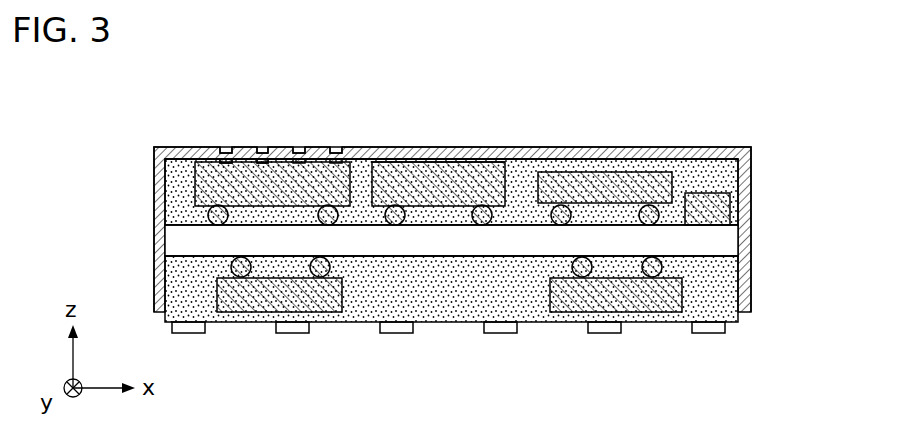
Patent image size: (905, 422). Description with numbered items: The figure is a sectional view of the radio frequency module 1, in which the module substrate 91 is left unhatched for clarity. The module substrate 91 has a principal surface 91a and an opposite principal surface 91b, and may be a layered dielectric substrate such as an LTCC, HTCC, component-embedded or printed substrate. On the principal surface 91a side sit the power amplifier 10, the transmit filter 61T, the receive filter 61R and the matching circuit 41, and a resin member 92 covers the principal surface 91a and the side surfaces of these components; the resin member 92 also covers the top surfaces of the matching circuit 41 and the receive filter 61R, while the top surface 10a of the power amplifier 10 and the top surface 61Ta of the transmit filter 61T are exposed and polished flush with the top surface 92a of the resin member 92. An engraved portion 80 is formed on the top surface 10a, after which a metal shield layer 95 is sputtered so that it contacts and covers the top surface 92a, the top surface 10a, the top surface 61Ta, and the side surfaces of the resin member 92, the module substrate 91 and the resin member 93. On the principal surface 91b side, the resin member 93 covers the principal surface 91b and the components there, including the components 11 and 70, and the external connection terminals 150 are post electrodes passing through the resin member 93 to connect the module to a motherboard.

The radio frequency module 1 is at (777, 95).
The power amplifier 10 is at (205, 185).
The top surface of the power amplifier 10a is at (240, 148).
The engraved portion 80 is at (293, 148).
The transmit filter 61T is at (487, 161).
The top surface of the transmit filter 61Ta is at (423, 161).
The receive filter 61R is at (593, 171).
The metal shield layer 95 is at (548, 158).
The resin member 92 is at (715, 180).
The top surface of the resin member 92a is at (677, 158).
The matching circuit 41 is at (700, 218).
The module substrate 91 is at (722, 243).
The principal surface 91a is at (722, 218).
The principal surface 91b is at (712, 260).
The resin member 93 is at (180, 287).
The electronic component 11 is at (250, 308).
The electronic component 70 is at (653, 304).
The external connection terminals 150 is at (193, 334).